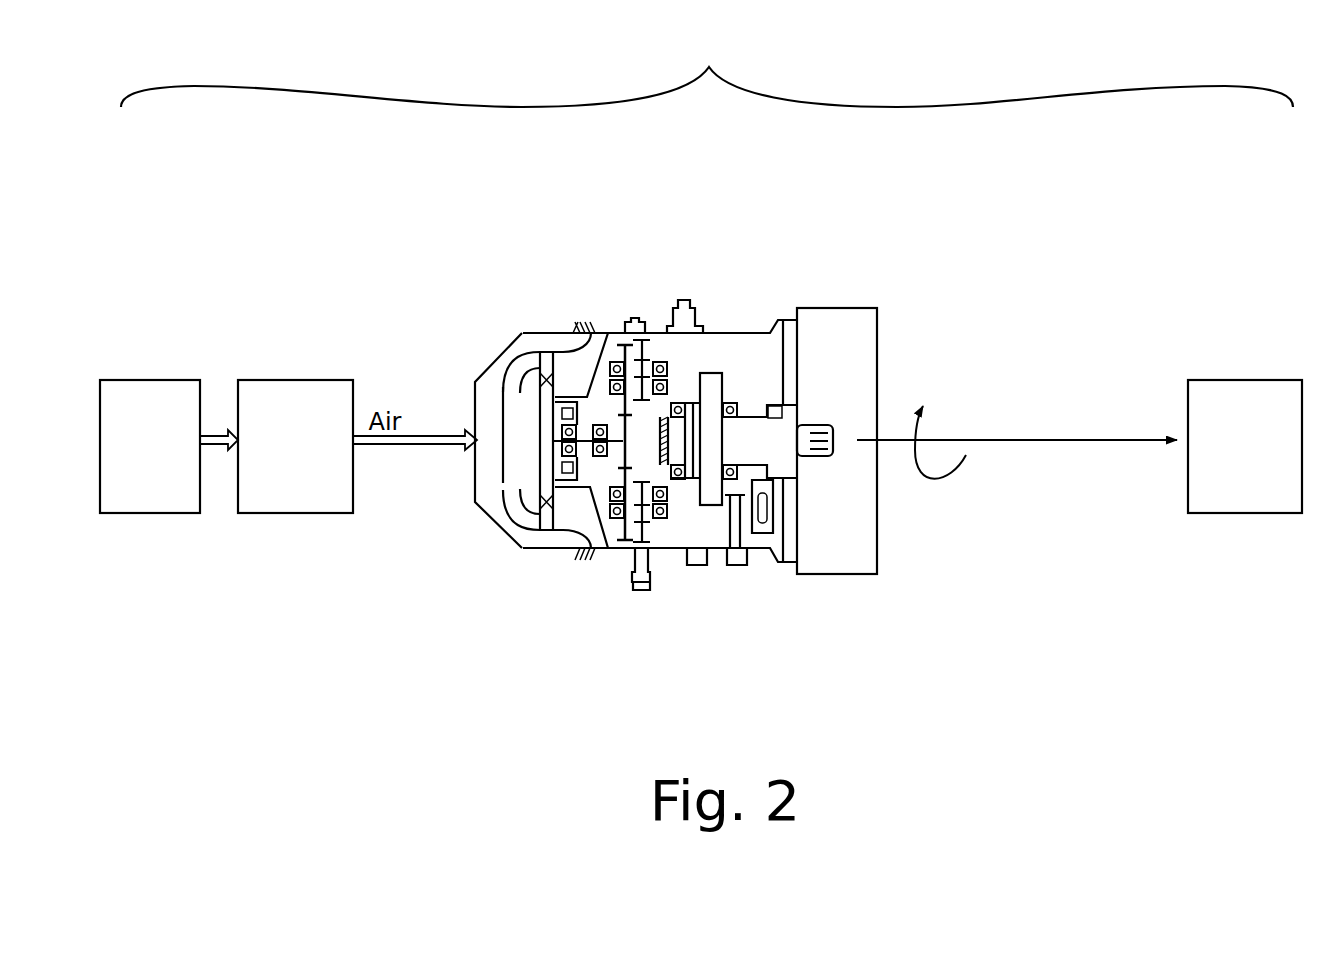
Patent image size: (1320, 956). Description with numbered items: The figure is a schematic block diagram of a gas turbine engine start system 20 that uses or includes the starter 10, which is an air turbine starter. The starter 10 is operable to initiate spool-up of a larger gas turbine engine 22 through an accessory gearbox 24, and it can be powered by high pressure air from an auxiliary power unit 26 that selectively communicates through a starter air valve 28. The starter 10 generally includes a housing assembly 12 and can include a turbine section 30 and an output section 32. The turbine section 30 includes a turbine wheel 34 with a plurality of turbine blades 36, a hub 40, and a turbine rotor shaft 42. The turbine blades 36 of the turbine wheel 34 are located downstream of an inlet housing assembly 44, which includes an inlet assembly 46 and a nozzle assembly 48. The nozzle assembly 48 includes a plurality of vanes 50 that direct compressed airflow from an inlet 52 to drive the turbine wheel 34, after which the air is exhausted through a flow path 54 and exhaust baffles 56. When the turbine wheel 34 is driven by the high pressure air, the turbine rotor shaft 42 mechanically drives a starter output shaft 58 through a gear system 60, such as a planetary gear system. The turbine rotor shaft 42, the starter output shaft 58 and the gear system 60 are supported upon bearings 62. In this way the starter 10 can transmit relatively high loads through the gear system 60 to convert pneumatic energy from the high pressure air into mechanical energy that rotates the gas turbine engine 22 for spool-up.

The starter 10 is at (961, 236).
The housing assembly 12 is at (616, 560).
The gas turbine engine start system 20 is at (446, 272).
The gas turbine engine 22 is at (1250, 380).
The accessory gearbox 24 is at (850, 568).
The auxiliary power unit 26 is at (143, 380).
The starter air valve 28 is at (290, 380).
The turbine section 30 is at (540, 267).
The output section 32 is at (753, 311).
The turbine wheel 34 is at (536, 457).
The turbine blades 36 is at (545, 363).
The hub 40 is at (492, 378).
The turbine rotor shaft 42 is at (584, 436).
The inlet housing assembly 44 is at (516, 350).
The inlet assembly 46 is at (522, 332).
The nozzle assembly 48 is at (487, 494).
The vanes 50 is at (519, 518).
The inlet 52 is at (487, 420).
The flow path 54 is at (578, 322).
The exhaust baffles 56 is at (591, 562).
The starter output shaft 58 is at (804, 426).
The gear system 60 is at (634, 441).
The bearings 62 is at (609, 362).